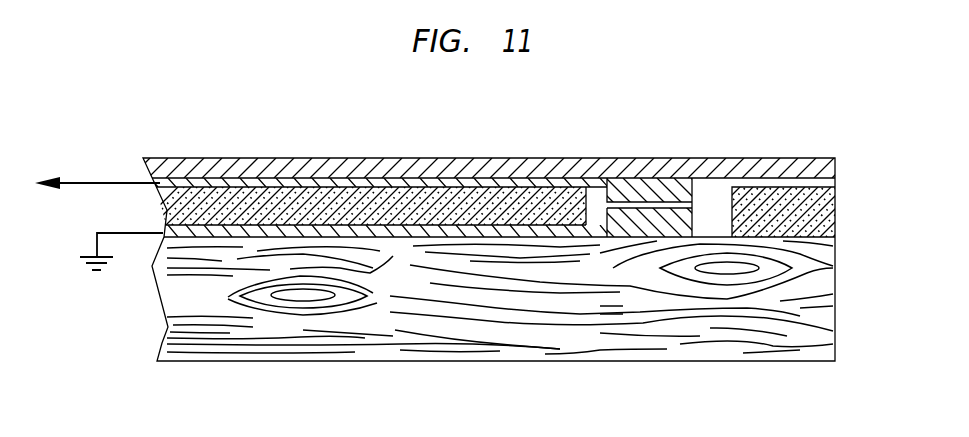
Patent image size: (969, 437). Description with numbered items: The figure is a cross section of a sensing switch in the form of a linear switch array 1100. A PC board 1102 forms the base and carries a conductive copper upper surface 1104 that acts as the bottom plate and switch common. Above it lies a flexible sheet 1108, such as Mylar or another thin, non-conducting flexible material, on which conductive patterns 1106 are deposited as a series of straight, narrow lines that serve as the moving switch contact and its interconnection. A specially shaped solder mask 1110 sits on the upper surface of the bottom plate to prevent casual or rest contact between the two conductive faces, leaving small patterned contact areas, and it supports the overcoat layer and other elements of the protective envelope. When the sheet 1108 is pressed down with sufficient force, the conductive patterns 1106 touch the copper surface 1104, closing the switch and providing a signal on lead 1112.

The linear switch array 1100 is at (719, 97).
The PC board 1102 is at (573, 347).
The conductive copper upper surface 1104 is at (388, 238).
The conductive patterns 1106 is at (382, 181).
The flexible sheet 1108 is at (560, 160).
The solder mask 1110 is at (167, 217).
The lead 1112 is at (82, 182).